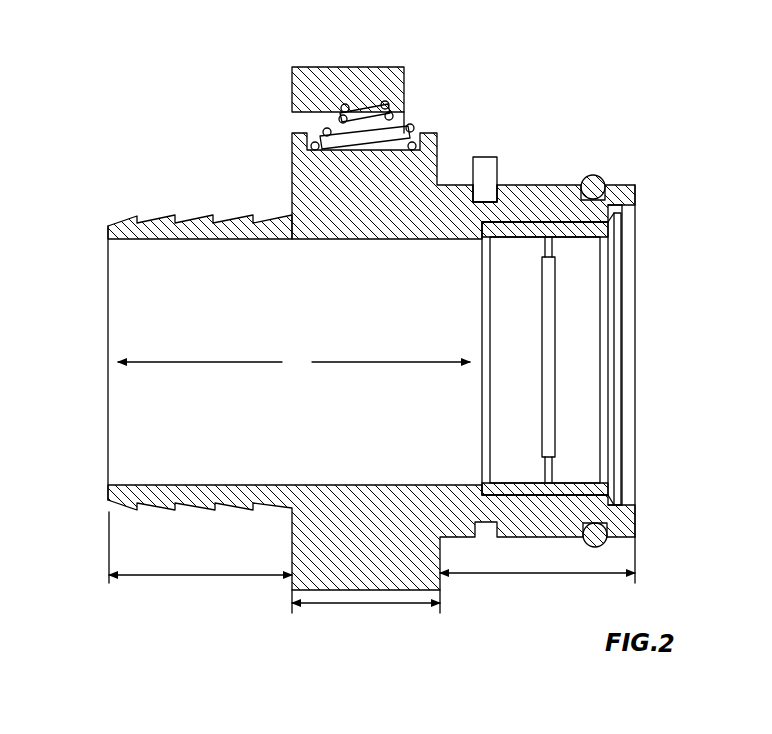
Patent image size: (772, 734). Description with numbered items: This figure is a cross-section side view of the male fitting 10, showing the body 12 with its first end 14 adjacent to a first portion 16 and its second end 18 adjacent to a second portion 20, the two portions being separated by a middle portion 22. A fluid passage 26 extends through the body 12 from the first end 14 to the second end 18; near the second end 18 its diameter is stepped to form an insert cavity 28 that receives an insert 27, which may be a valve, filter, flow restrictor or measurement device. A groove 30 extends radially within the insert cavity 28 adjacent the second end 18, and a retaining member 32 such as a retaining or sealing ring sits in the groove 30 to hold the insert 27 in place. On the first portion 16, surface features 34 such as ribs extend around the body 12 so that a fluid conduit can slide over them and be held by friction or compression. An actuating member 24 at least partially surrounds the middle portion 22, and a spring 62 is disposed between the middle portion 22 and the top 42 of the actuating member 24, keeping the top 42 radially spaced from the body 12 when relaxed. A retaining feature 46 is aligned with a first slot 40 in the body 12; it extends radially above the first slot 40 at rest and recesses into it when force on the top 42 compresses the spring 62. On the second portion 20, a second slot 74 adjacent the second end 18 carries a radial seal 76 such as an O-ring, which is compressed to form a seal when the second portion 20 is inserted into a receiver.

The male fitting 10 is at (126, 138).
The body 12 is at (414, 176).
The first end 14 is at (107, 378).
The first portion 16 is at (233, 578).
The second end 18 is at (633, 360).
The second portion 20 is at (552, 576).
The middle portion 22 is at (375, 604).
The actuating member 24 is at (389, 60).
The fluid passage 26 is at (294, 362).
The insert 27 is at (548, 455).
The insert cavity 28 is at (482, 398).
The groove 30 is at (622, 216).
The retaining member 32 is at (620, 245).
The surface features 34 is at (208, 218).
The first slot 40 is at (485, 194).
The top 42 is at (336, 70).
The retaining feature 46 is at (492, 163).
The spring 62 is at (378, 127).
The second slot 74 is at (604, 193).
The radial seal 76 is at (598, 177).